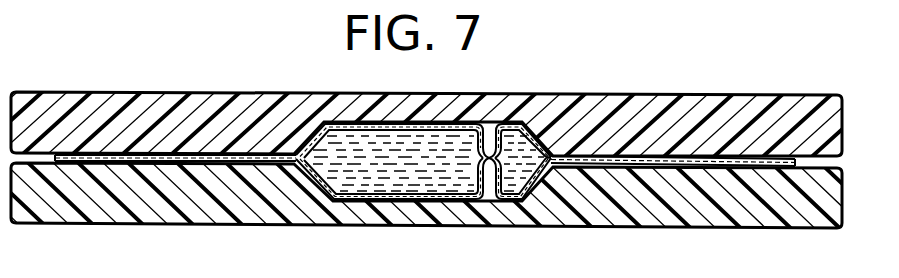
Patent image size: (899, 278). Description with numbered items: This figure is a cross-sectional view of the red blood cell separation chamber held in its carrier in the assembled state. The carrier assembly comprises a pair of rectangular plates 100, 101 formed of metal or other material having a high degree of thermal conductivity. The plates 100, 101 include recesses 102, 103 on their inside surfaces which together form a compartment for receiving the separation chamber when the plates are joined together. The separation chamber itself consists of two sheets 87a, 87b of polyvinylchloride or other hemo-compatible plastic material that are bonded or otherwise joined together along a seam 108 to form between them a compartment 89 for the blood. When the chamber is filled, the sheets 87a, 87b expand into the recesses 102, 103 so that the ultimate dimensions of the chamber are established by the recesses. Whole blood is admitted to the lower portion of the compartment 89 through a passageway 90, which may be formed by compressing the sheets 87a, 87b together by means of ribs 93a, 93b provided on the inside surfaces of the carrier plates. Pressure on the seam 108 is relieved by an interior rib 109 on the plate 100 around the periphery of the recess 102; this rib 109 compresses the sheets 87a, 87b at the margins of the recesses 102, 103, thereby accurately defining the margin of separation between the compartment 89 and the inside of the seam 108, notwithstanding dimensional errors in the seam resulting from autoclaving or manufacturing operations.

The rectangular plate 100 is at (102, 110).
The rectangular plate 101 is at (100, 202).
The recess 102 is at (357, 123).
The recess 103 is at (360, 201).
The seam 108 is at (278, 156).
The interior rib 109 is at (300, 150).
The sheet 87a is at (389, 123).
The sheet 87b is at (433, 200).
The compartment 89 is at (440, 162).
The rib 93a is at (470, 125).
The rib 93b is at (510, 197).
The passageway 90 is at (552, 165).